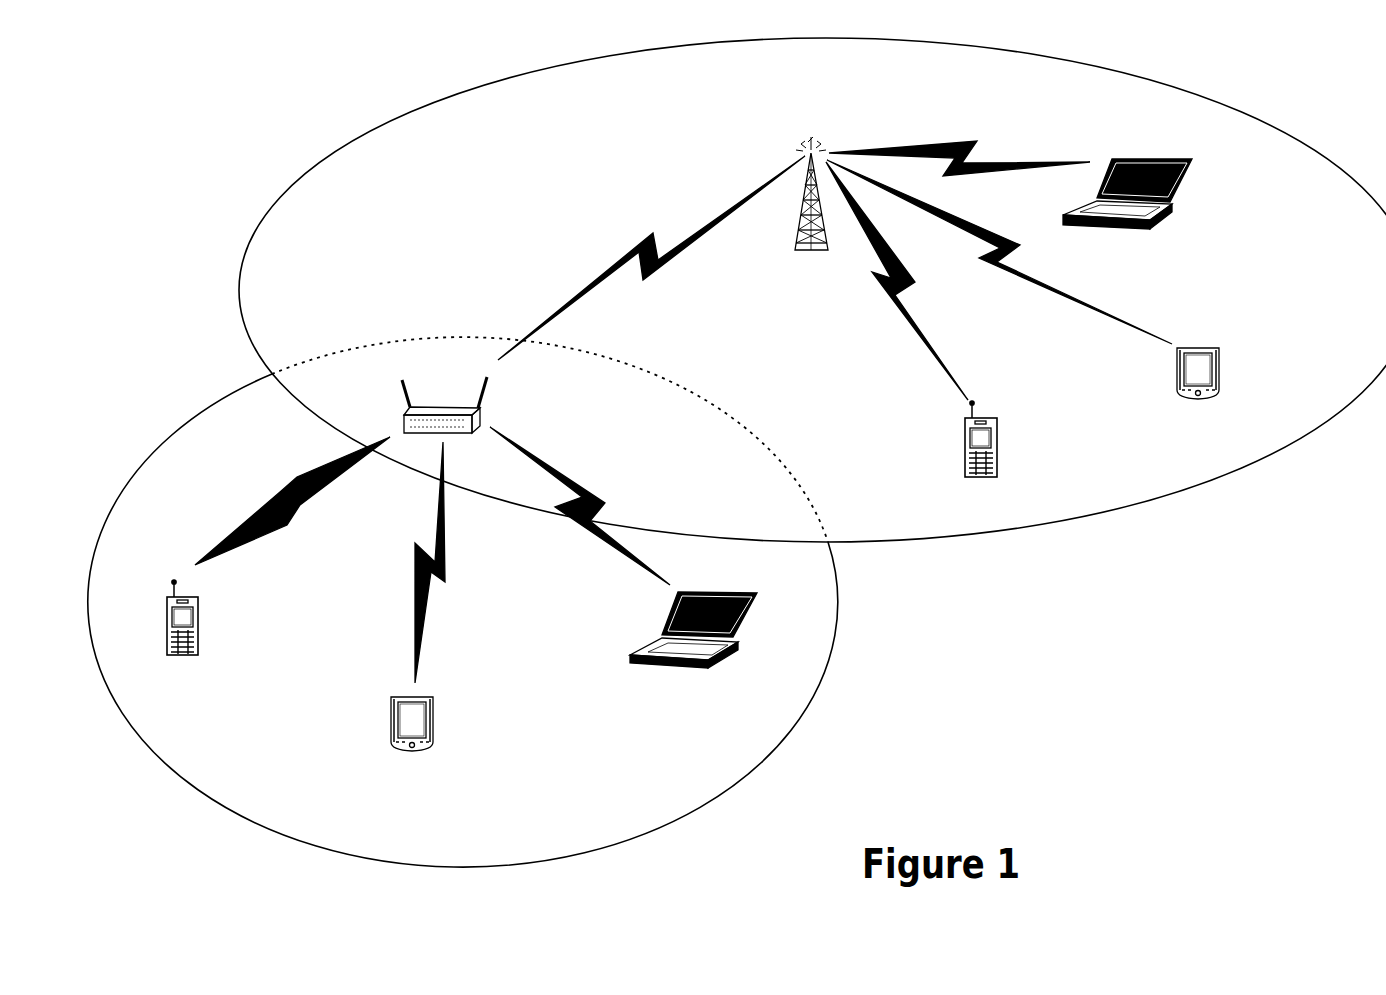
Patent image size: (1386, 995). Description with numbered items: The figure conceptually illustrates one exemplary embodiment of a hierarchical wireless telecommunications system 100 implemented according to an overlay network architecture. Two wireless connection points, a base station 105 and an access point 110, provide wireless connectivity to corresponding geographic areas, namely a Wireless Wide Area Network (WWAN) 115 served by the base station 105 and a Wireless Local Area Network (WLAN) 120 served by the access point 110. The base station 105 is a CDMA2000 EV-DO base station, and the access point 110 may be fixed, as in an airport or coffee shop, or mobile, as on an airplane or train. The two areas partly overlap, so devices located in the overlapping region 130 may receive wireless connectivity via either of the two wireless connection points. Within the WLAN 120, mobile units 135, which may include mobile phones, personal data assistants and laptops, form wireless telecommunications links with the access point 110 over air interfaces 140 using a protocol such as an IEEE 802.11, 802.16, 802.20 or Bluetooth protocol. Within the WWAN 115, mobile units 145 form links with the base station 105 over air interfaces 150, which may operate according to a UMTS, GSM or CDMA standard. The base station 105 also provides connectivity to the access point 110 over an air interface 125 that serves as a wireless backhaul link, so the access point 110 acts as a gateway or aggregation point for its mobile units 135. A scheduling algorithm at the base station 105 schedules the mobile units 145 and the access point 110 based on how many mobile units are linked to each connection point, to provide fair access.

The hierarchical wireless telecommunications system 100 is at (1218, 82).
The base station 105 is at (813, 252).
The access point 110 is at (404, 418).
The Wireless Wide Area Network (WWAN) 115 is at (893, 97).
The Wireless Local Area Network (WLAN) 120 is at (585, 825).
The air interface 125 is at (632, 247).
The overlapping region 130 is at (715, 488).
The mobile units 135 is at (183, 656).
The air interfaces 140 is at (277, 490).
The mobile units 145 is at (1168, 210).
The air interfaces 150 is at (963, 140).